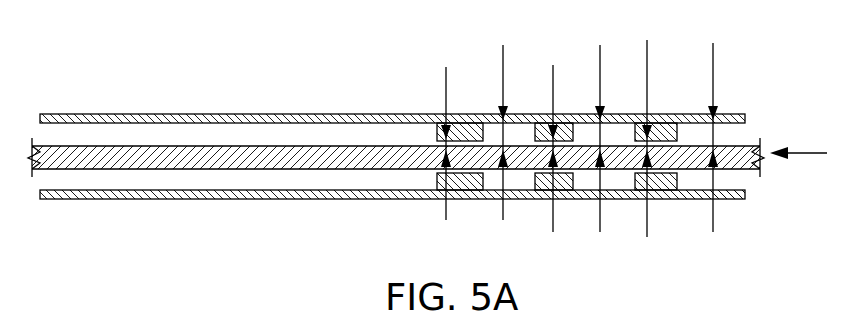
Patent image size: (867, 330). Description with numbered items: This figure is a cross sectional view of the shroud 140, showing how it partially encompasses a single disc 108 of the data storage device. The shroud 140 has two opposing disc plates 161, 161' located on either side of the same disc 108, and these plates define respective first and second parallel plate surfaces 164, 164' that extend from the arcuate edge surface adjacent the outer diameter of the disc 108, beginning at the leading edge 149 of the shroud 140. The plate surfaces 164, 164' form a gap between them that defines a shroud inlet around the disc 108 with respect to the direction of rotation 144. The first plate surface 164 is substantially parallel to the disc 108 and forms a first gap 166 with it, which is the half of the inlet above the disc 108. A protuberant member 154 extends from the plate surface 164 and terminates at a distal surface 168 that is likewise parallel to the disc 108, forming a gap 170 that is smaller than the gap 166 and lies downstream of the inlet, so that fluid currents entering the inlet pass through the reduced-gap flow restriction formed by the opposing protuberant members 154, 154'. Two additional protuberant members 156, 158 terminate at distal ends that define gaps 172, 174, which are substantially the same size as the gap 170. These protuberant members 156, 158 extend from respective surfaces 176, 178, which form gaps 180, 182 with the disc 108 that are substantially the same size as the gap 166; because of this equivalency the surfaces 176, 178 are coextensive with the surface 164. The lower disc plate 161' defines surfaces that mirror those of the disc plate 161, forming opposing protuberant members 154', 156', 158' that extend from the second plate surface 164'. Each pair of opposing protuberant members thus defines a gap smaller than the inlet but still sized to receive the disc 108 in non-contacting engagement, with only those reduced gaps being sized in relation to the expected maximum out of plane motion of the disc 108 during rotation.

The shroud 140 is at (176, 72).
The disc plate 161 is at (392, 101).
The disc plate 161' is at (392, 210).
The leading edge 149 is at (417, 101).
The direction of rotation 144 is at (800, 153).
The first plate surface 164 is at (420, 166).
The disc 108 is at (423, 210).
The gap 174 is at (446, 88).
The gap 182 is at (503, 70).
The gap 172 is at (553, 68).
The gap 180 is at (600, 55).
The gap 170 is at (647, 60).
The first gap 166 is at (713, 60).
The protuberant member 158 is at (464, 110).
The surface 178 is at (532, 125).
The protuberant member 156 is at (561, 110).
The surface 176 is at (628, 125).
The protuberant member 154 is at (659, 101).
The protuberant member 158' is at (464, 209).
The protuberant member 156' is at (563, 211).
The protuberant member 154' is at (606, 219).
The distal surface 168 is at (668, 178).
The second plate surface 164' is at (719, 213).